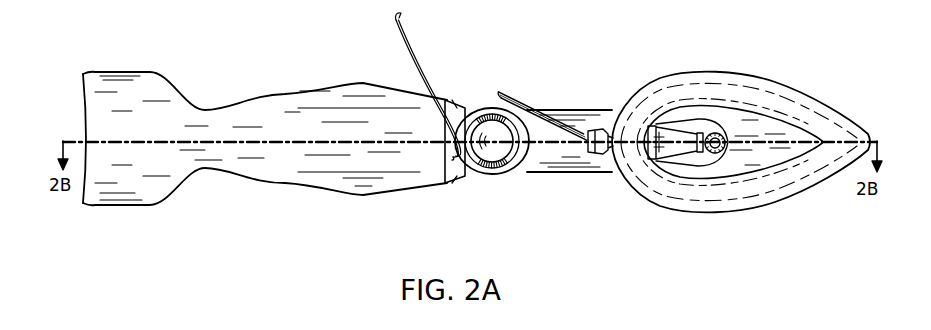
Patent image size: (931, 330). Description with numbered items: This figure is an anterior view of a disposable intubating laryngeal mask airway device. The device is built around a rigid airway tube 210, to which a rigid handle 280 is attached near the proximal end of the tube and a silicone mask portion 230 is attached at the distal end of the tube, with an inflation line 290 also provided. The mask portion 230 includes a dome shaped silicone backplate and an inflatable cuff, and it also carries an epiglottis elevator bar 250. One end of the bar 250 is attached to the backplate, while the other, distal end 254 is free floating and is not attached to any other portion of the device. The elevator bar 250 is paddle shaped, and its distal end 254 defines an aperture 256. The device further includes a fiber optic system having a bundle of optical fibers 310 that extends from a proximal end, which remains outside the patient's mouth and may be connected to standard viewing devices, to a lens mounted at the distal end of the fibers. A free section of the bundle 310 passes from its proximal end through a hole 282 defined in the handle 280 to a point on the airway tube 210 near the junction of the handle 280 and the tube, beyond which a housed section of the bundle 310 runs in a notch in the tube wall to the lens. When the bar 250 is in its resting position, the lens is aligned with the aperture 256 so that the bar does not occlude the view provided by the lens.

The airway tube 210 is at (578, 108).
The mask portion 230 is at (797, 85).
The epiglottis elevator bar 250 is at (692, 128).
The distal end of the bar 254 is at (732, 135).
The aperture 256 is at (717, 153).
The handle 280 is at (320, 88).
The hole 282 is at (448, 167).
The inflation line 290 is at (525, 95).
The bundle of optical fibers 310 is at (407, 48).